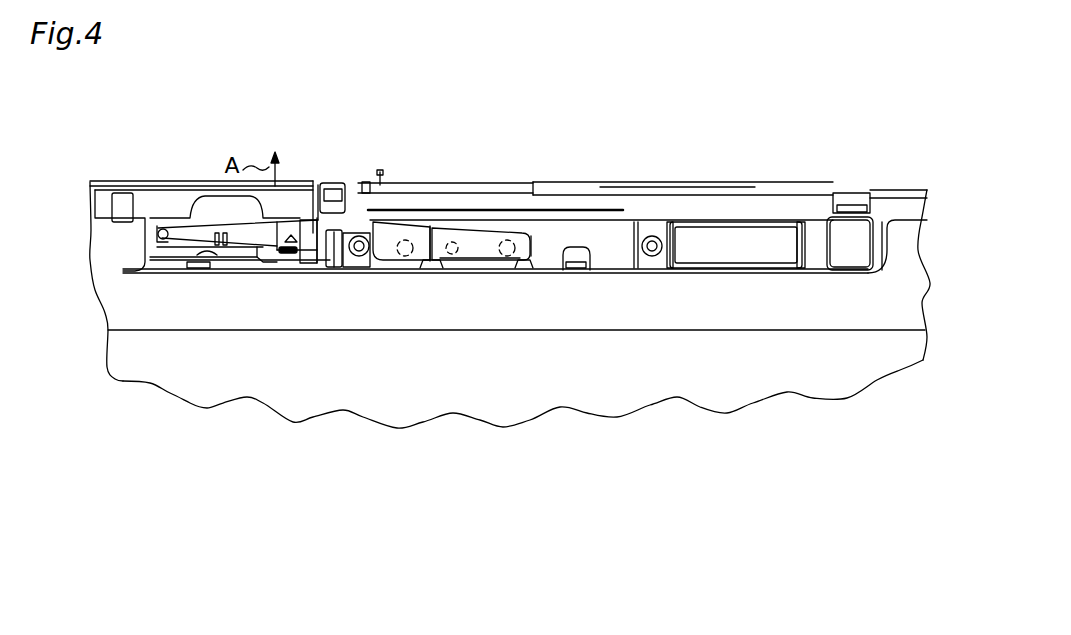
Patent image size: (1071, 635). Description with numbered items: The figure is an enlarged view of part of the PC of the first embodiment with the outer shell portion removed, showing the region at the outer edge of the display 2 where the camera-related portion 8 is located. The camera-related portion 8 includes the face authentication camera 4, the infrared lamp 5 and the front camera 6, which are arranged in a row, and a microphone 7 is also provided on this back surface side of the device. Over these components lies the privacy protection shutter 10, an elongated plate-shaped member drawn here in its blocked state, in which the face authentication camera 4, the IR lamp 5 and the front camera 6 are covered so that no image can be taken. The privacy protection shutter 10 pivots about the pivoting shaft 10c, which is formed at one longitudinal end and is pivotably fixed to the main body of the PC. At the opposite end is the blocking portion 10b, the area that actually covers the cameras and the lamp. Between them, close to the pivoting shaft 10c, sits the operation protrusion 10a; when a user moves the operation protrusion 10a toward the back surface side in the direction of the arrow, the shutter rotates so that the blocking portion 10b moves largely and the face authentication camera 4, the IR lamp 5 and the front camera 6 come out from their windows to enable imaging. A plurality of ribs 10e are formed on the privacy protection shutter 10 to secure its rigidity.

The display 2 is at (840, 378).
The face authentication camera 4 is at (408, 240).
The infrared (IR) lamp 5 is at (453, 241).
The front camera 6 is at (508, 239).
The microphone 7 is at (358, 236).
The camera-related portion 8 is at (540, 117).
The privacy protection shutter 10 is at (318, 185).
The operation protrusion 10a is at (289, 254).
The blocking portion 10b is at (477, 257).
The pivoting shaft 10c is at (163, 243).
The ribs 10e is at (430, 251).